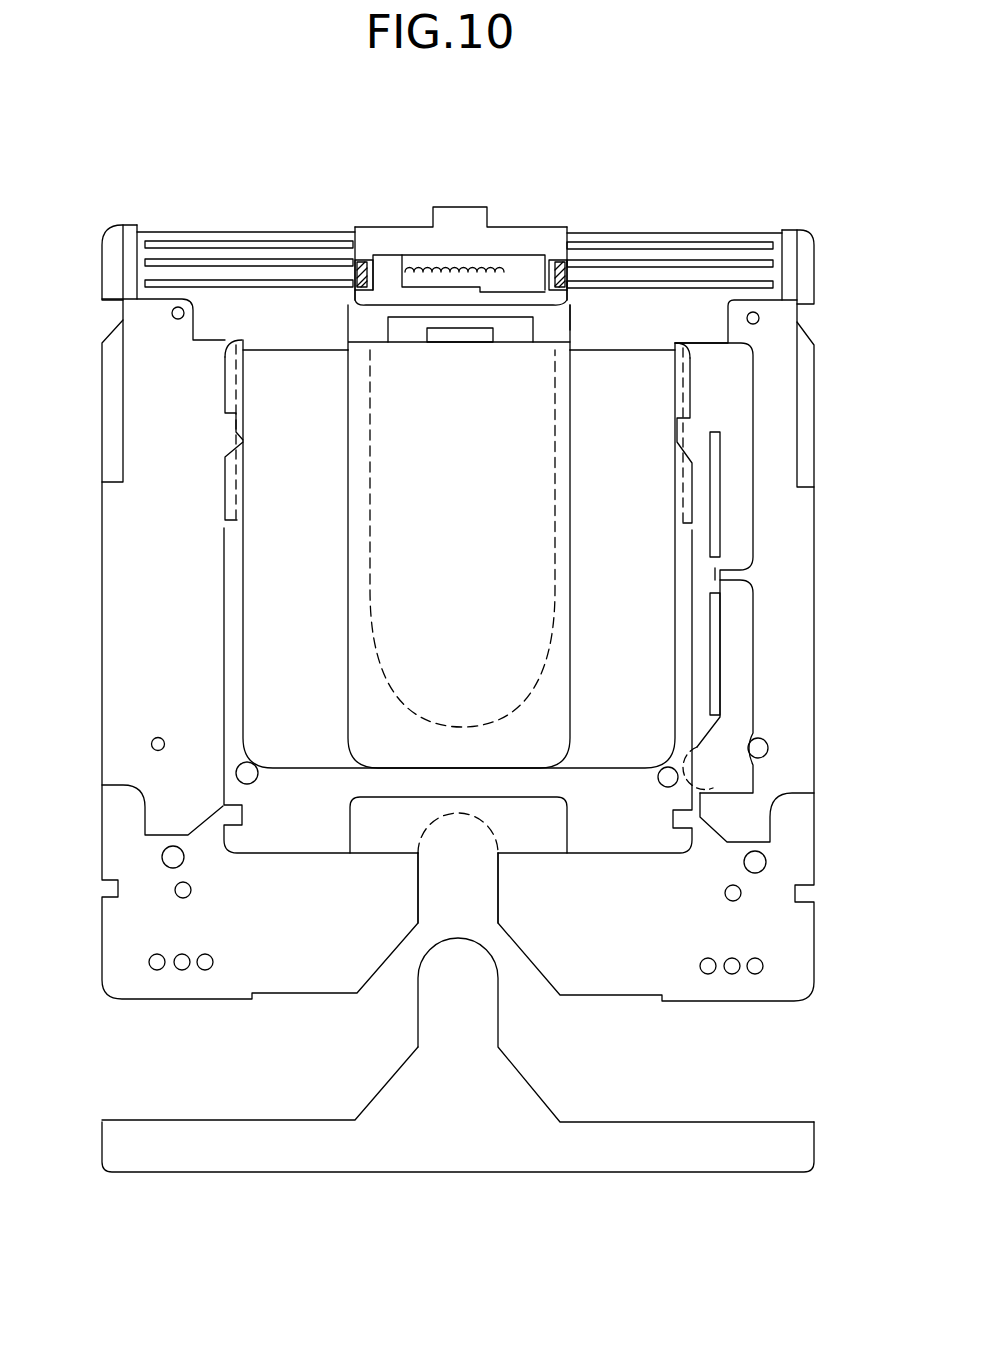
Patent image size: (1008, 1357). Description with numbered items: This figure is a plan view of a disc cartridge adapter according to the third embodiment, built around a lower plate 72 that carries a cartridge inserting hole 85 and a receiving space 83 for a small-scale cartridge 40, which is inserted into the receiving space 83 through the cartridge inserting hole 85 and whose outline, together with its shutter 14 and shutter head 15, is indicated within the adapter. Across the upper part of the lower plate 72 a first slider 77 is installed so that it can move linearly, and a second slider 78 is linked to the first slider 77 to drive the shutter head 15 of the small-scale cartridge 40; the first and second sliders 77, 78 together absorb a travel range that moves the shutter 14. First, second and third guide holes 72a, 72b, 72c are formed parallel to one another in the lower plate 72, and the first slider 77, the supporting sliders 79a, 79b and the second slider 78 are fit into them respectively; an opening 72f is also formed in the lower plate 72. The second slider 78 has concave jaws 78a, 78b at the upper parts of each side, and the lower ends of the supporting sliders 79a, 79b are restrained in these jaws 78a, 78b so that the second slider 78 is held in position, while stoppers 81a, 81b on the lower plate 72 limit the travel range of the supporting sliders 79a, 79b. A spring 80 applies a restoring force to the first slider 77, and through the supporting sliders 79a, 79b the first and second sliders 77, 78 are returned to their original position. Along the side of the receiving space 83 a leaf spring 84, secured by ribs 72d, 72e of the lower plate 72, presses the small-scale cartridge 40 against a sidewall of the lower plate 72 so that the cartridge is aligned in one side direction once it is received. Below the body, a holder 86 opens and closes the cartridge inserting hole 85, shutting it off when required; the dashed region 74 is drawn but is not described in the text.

The shutter 14 is at (572, 410).
The shutter head 15 is at (447, 330).
The small-scale cartridge 40 is at (232, 396).
The lower plate 72 is at (722, 572).
The first guide hole 72a is at (680, 250).
The second guide hole 72b is at (736, 268).
The third guide hole 72c is at (765, 290).
The rib 72d is at (715, 505).
The rib 72e is at (715, 655).
The opening 72f is at (572, 320).
The battery outline 74 is at (555, 505).
The first slider 77 is at (458, 200).
The second slider 78 is at (510, 278).
The concave jaw 78a is at (362, 301).
The concave jaw 78b is at (571, 297).
The supporting slider 79a is at (360, 272).
The supporting slider 79b is at (563, 268).
The spring 80 is at (500, 262).
The stopper 81a is at (358, 258).
The stopper 81b is at (558, 262).
The receiving space 83 is at (200, 606).
The leaf spring 84 is at (718, 417).
The cartridge inserting hole 85 is at (458, 877).
The holder 86 is at (776, 1135).